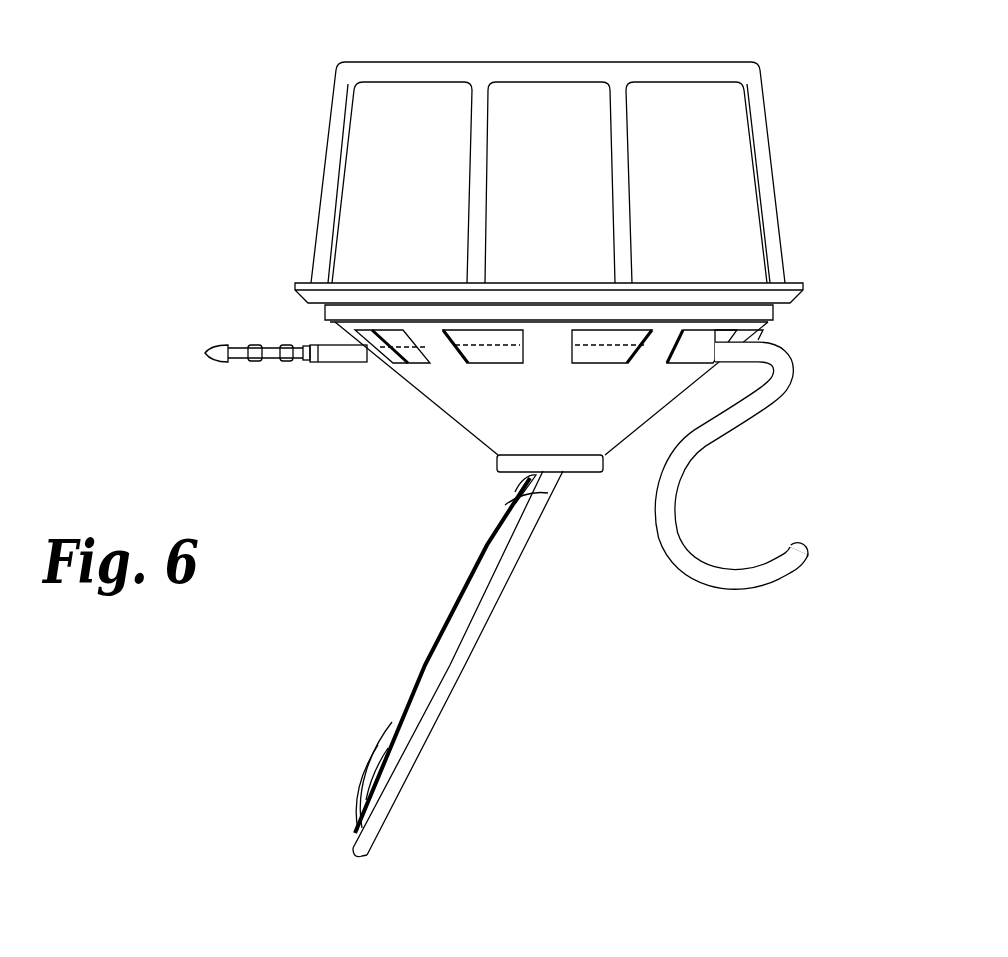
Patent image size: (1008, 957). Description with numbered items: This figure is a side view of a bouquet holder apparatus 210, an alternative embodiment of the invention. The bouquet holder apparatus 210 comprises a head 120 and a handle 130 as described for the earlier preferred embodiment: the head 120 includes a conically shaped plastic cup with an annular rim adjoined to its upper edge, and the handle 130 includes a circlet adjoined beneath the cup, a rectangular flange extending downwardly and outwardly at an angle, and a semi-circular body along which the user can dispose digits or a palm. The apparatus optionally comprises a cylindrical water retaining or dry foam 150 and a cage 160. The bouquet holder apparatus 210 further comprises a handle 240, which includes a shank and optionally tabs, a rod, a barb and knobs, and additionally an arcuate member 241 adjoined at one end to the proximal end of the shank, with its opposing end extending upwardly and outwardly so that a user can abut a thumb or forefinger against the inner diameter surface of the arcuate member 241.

The bouquet holder apparatus 210 is at (520, 439).
The cage 160 is at (768, 100).
The foam 150 is at (745, 185).
The head 120 is at (390, 414).
The handle 130 is at (400, 657).
The handle 240 is at (754, 511).
The arcuate member 241 is at (680, 565).